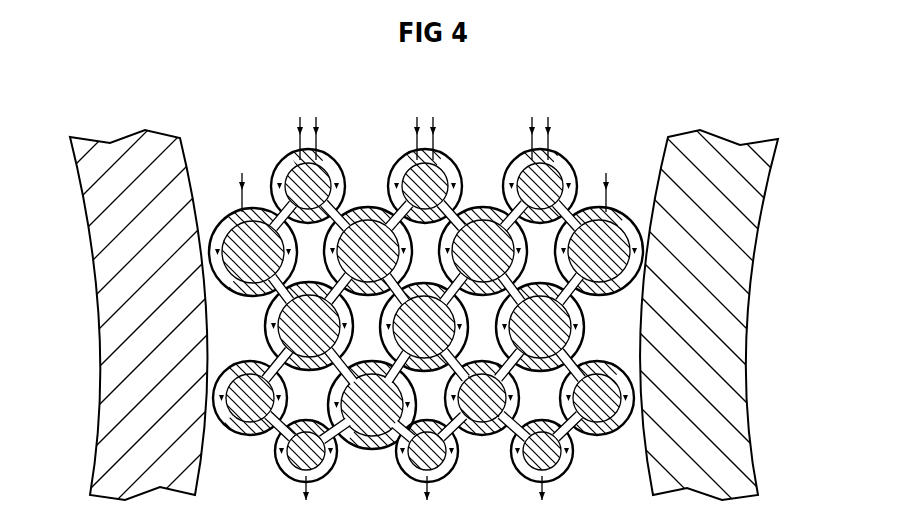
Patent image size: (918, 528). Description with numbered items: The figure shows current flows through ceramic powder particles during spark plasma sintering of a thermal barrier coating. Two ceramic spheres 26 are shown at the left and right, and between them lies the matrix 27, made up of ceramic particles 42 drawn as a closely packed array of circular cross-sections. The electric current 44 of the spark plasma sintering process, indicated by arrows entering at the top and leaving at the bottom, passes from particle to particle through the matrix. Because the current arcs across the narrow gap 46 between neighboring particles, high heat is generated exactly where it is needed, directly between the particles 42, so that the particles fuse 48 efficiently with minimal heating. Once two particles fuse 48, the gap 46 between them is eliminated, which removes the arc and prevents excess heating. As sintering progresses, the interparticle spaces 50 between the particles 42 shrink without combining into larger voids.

The ceramic spheres 26 is at (107, 319).
The matrix 27 is at (355, 143).
The ceramic particles 42 is at (291, 156).
The electric current 44 is at (300, 118).
The gap 46 is at (517, 427).
The fusing 48 is at (395, 447).
The interparticle spaces 50 is at (615, 330).